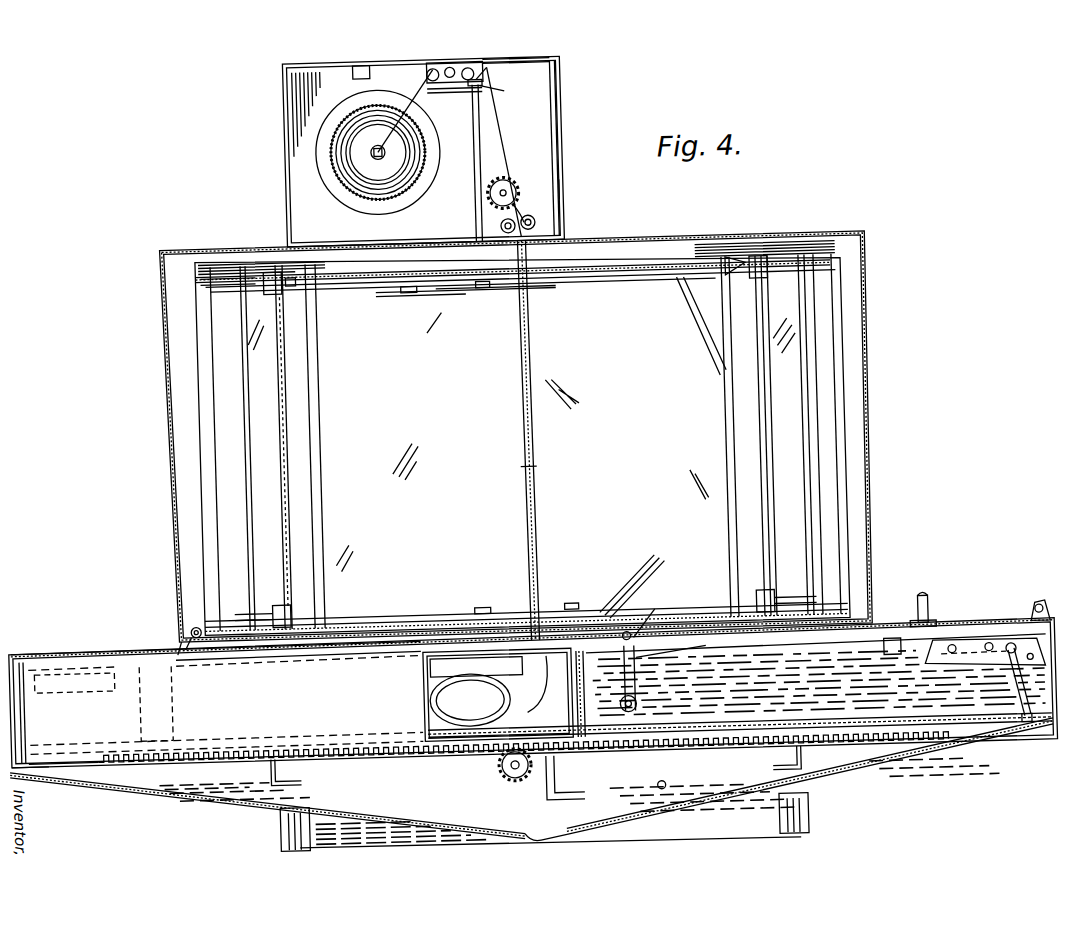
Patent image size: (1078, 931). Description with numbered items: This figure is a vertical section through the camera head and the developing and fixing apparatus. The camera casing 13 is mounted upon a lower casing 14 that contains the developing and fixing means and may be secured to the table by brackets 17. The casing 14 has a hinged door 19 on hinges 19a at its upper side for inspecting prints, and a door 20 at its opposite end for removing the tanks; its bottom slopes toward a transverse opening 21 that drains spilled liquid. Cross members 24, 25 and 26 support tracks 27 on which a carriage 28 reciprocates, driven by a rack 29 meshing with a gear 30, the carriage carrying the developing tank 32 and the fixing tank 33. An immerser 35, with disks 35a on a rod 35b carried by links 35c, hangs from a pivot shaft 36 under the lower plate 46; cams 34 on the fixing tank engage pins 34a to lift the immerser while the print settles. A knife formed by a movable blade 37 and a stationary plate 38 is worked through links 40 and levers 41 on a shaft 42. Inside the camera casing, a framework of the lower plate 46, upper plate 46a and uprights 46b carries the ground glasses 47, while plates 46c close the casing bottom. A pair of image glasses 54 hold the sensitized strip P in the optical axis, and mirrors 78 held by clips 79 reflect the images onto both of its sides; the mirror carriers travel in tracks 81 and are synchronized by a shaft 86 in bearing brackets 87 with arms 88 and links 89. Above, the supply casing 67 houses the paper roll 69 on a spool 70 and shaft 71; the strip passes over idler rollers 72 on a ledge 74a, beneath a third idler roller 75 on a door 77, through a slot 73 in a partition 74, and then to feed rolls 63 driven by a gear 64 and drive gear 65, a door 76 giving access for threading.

The camera head or casing 13 is at (167, 392).
The casing 14 is at (98, 640).
The brackets 17 is at (270, 808).
The door 19 is at (940, 638).
The hinges 19a is at (1042, 620).
The door 20 is at (529, 677).
The transverse opening 21 is at (528, 820).
The cross member 24 is at (292, 775).
The cross member 25 is at (566, 777).
The cross member 26 is at (793, 773).
The tracks 27 is at (74, 758).
The carriage 28 is at (970, 737).
The rack 29 is at (830, 760).
The gear 30 is at (494, 774).
The developing tank 32 is at (417, 686).
The fixing tank 33 is at (1014, 700).
The cams 34 is at (975, 655).
The pins or projections 34a is at (636, 650).
The immerser 35 is at (640, 650).
The disks 35a is at (623, 716).
The rod 35b is at (612, 706).
The links 35c is at (618, 634).
The pivot shaft 36 is at (628, 640).
The movable cutting blade 37 is at (486, 612).
The stationary plate 38 is at (548, 618).
The links 40 is at (272, 652).
The cranks or levers 41 is at (176, 630).
The shaft 42 is at (191, 617).
The lower plate 46 is at (438, 618).
The upper plate 46a is at (600, 266).
The uprights 46b is at (499, 382).
The plates 46c is at (398, 616).
The focussing or ground glasses 47 is at (543, 440).
The image glasses 54 is at (522, 463).
The feed rolls 63 is at (518, 196).
The gear 64 is at (506, 225).
The drive gear 65 is at (496, 192).
The casing 67 is at (300, 137).
The roll 69 is at (362, 178).
The spool 70 is at (412, 204).
The shaft 71 is at (393, 148).
The idler rollers 72 is at (440, 66).
The slot 73 is at (500, 88).
The partition 74 is at (482, 130).
The ledge 74a is at (455, 95).
The idler roller 75 is at (458, 64).
The door 76 is at (567, 190).
The door or panel 77 is at (500, 62).
The mirrors 78 is at (525, 451).
The clips 79 is at (470, 286).
The guides or tracks 81 is at (232, 280).
The shaft 86 is at (286, 570).
The bearing brackets 87 is at (274, 290).
The arms 88 is at (294, 282).
The links 89 is at (385, 282).
The sensitized paper strip P is at (508, 150).